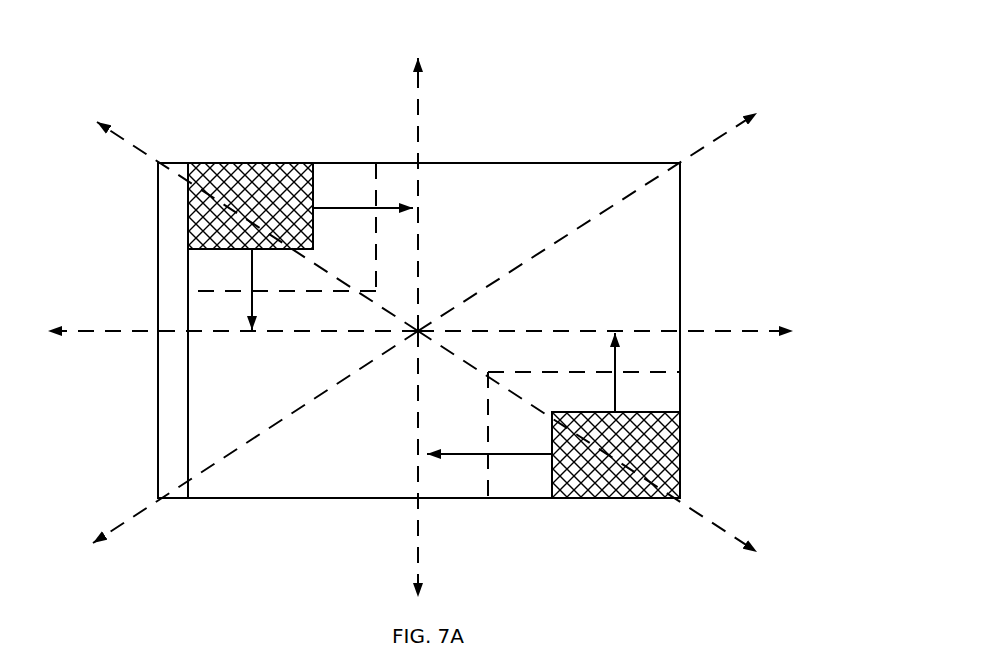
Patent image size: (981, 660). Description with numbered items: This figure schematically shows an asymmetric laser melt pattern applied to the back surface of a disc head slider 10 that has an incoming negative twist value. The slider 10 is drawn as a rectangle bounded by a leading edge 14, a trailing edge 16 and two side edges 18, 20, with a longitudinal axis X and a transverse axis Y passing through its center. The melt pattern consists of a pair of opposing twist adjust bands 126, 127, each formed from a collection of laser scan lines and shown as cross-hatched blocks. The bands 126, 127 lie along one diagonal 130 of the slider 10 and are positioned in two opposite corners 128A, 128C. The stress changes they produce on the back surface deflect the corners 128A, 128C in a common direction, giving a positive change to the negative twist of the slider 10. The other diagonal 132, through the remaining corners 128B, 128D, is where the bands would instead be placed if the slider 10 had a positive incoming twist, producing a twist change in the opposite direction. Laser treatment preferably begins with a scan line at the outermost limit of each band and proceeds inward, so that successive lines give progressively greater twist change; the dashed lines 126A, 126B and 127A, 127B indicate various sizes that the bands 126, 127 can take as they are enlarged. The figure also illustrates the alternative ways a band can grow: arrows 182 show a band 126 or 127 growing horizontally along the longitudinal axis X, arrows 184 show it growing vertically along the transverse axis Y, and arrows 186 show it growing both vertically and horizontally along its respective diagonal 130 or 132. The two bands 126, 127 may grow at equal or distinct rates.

The disc head slider 10 is at (200, 123).
The leading edge 14 is at (681, 393).
The trailing edge 16 is at (158, 461).
The side edge 18 is at (487, 163).
The side edge 20 is at (317, 500).
The twist adjust band 126 is at (188, 153).
The twist adjust band 127 is at (680, 505).
The dashed line 126A is at (377, 200).
The dashed line 126B is at (418, 237).
The dashed line 127A is at (488, 430).
The dashed line 127B is at (415, 473).
The corner 128A is at (188, 182).
The corner 128B is at (212, 478).
The corner 128C is at (676, 483).
The corner 128D is at (652, 181).
The diagonal 130 is at (725, 530).
The diagonal 132 is at (728, 132).
The arrows 182 is at (363, 207).
The arrows 184 is at (253, 278).
The arrows 186 is at (377, 307).
The longitudinal axis X is at (112, 330).
The transverse axis Y is at (420, 128).